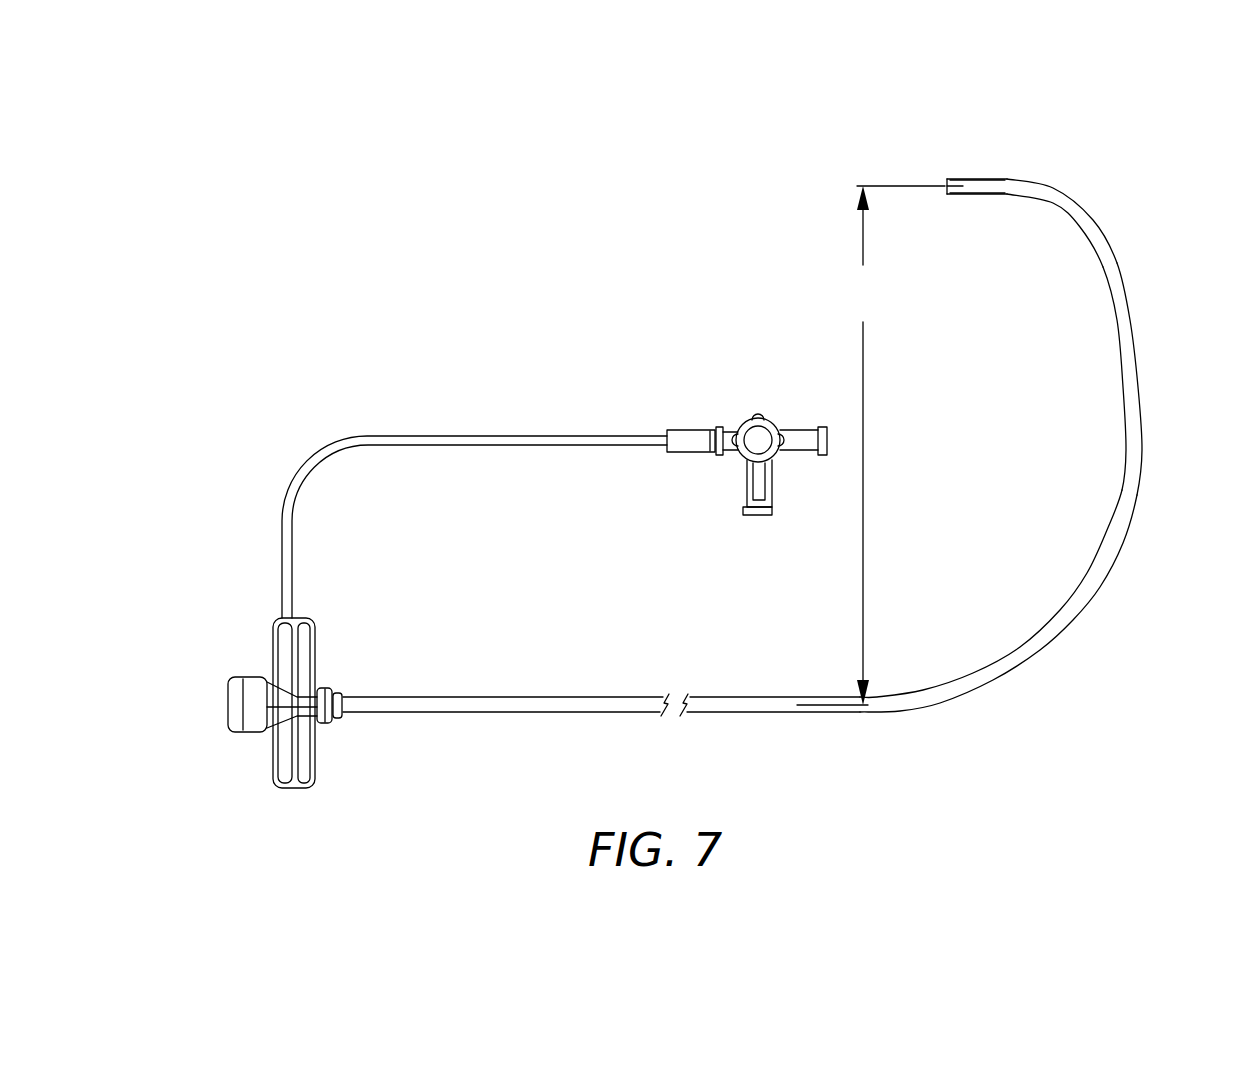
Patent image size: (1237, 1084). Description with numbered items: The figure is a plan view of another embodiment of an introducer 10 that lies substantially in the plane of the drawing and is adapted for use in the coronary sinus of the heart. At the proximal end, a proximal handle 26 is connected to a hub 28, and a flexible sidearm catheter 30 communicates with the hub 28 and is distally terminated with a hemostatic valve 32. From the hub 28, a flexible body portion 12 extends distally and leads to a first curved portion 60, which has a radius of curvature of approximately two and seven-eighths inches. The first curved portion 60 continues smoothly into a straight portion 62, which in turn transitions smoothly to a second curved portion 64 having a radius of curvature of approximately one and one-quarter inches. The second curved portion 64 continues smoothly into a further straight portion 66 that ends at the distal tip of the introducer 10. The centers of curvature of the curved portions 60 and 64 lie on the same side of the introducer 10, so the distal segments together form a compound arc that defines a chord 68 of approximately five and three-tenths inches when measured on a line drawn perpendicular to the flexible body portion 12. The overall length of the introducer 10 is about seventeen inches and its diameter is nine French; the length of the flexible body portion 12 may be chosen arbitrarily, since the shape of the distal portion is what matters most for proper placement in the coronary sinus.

The introducer 10 is at (922, 806).
The flexible body portion 12 is at (838, 675).
The proximal handle 26 is at (317, 633).
The hub 28 is at (253, 680).
The flexible sidearm catheter 30 is at (587, 447).
The hemostatic valve 32 is at (739, 427).
The first curved portion 60 is at (855, 742).
The straight portion 62 is at (1160, 309).
The second curved portion 64 is at (1014, 147).
The straight portion 66 is at (947, 150).
The chord 68 is at (896, 445).